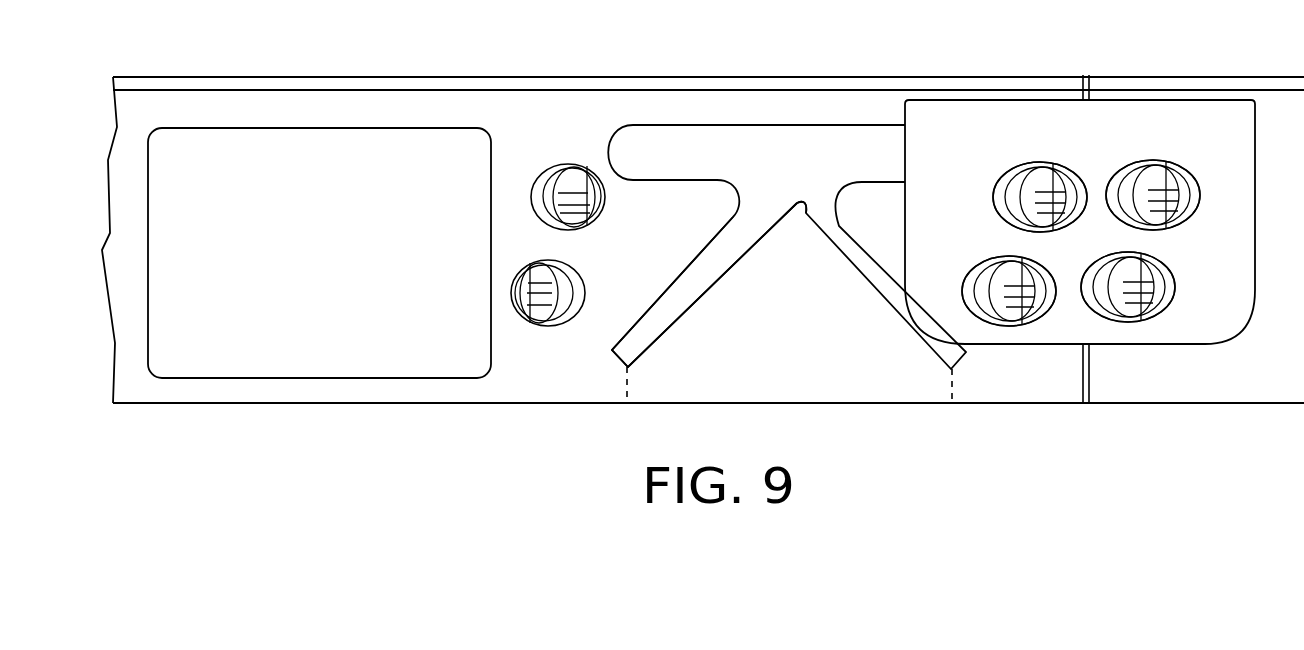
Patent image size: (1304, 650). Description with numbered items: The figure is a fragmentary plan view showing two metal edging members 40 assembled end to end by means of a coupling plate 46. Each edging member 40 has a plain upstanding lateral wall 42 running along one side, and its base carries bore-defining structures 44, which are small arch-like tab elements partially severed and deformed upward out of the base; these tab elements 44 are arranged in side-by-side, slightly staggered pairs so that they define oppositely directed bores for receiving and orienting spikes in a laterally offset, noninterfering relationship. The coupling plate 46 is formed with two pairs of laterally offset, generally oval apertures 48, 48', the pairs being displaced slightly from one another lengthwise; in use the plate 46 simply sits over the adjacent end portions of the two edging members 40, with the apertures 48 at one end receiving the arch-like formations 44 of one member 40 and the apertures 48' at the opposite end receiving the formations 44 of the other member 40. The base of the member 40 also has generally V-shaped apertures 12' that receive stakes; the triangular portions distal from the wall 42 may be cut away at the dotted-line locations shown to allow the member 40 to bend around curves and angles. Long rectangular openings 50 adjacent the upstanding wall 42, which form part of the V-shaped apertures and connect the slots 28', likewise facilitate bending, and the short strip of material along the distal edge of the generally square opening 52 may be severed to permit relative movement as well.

The edging member 40 is at (398, 418).
The upstanding lateral wall 42 is at (820, 88).
The bore-defining structures 44 is at (545, 287).
The coupling plate 46 is at (988, 120).
The oval apertures 48 is at (1105, 278).
The oval apertures 48' is at (1082, 170).
The long rectangular openings 50 is at (684, 128).
The generally square opening 52 is at (228, 128).
The generally V-shaped apertures 12' is at (783, 241).
The slots 28' is at (704, 285).